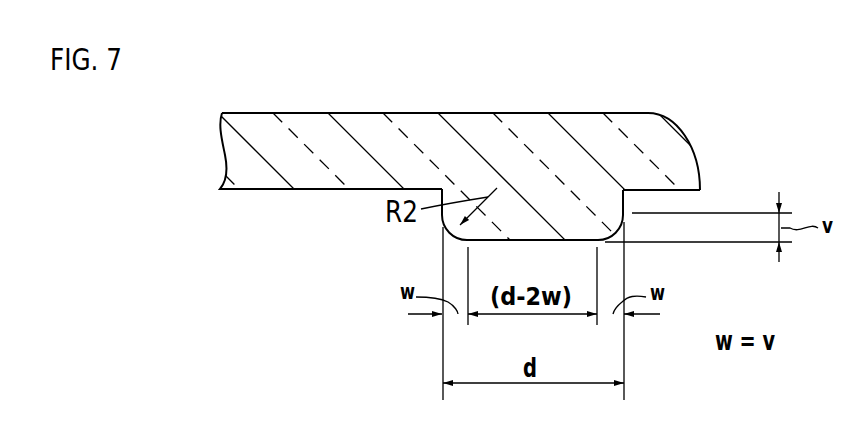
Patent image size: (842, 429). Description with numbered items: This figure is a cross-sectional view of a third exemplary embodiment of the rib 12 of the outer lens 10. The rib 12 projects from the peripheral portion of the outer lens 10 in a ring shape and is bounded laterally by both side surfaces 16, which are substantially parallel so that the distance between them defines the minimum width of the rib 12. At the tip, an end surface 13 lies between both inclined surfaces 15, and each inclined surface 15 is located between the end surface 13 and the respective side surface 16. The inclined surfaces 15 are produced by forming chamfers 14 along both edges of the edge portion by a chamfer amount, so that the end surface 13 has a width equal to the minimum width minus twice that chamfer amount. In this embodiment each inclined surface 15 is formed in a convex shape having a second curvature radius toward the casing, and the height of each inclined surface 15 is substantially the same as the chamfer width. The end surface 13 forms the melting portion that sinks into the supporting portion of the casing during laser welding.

The outer lens 10 is at (307, 132).
The rib 12 is at (560, 208).
The end surface 13 is at (522, 240).
The chamfers 14 is at (444, 236).
The inclined surfaces 15 is at (470, 236).
The side surfaces 16 is at (633, 200).